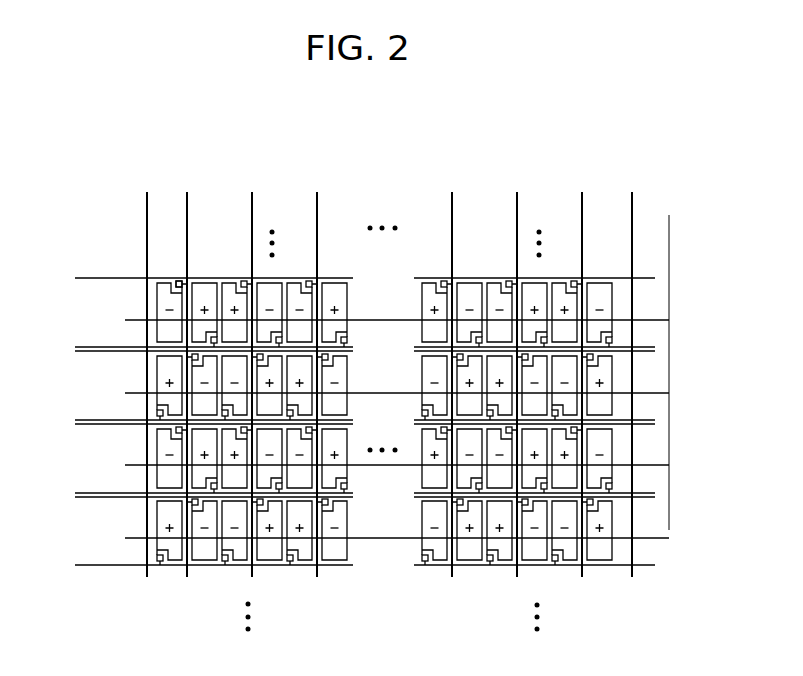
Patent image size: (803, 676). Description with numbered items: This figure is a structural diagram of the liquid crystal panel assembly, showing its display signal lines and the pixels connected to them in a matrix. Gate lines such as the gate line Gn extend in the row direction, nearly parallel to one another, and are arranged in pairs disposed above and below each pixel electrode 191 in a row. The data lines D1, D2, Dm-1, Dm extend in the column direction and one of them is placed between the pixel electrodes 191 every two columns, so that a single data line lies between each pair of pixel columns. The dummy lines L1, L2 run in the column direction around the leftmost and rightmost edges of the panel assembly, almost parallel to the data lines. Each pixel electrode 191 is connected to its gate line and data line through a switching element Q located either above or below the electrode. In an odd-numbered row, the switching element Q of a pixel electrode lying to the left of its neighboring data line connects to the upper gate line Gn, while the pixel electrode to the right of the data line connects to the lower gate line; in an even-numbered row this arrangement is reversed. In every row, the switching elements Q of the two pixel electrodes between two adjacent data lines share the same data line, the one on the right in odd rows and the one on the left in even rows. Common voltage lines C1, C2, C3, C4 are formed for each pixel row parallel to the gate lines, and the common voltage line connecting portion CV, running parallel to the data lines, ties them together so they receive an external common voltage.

The pixel electrode 191 is at (158, 296).
The switching element Q is at (178, 280).
The dummy line L1 is at (147, 203).
The dummy line L2 is at (632, 250).
The common voltage line connecting portion CV is at (669, 308).
The gate line Gn is at (350, 267).
The data line D1 is at (200, 384).
The data line D2 is at (265, 384).
The data line Dm-1 is at (542, 384).
The data line Dm is at (597, 384).
The common voltage line C1 is at (385, 320).
The common voltage line C2 is at (385, 393).
The common voltage line C3 is at (385, 465).
The common voltage line C4 is at (385, 538).